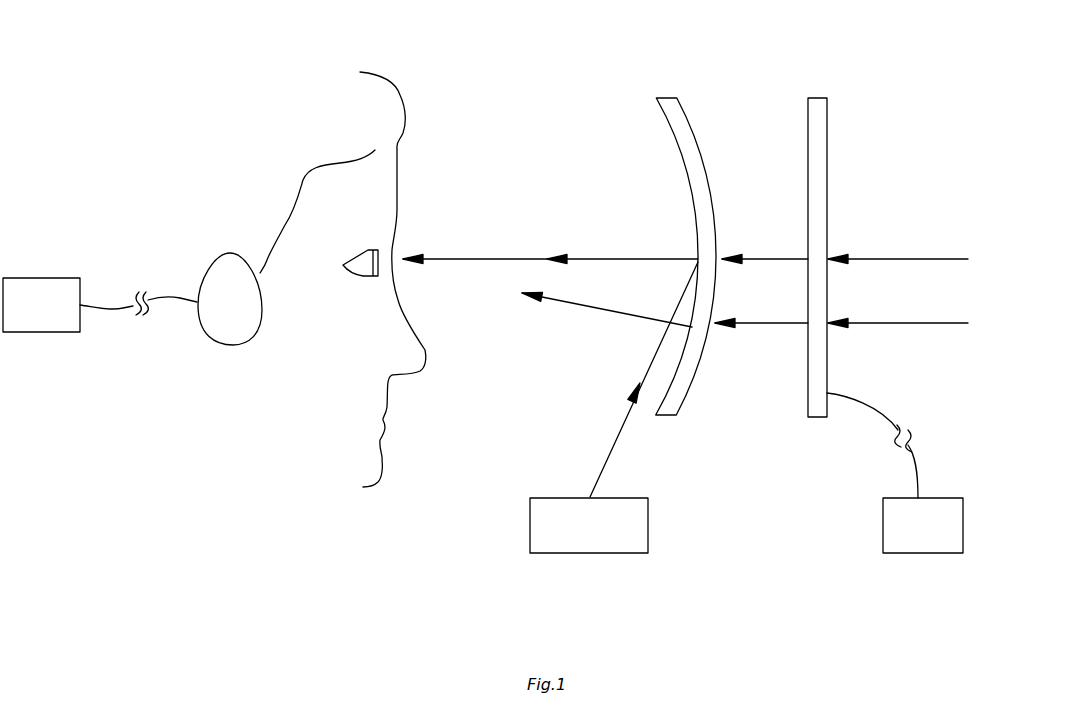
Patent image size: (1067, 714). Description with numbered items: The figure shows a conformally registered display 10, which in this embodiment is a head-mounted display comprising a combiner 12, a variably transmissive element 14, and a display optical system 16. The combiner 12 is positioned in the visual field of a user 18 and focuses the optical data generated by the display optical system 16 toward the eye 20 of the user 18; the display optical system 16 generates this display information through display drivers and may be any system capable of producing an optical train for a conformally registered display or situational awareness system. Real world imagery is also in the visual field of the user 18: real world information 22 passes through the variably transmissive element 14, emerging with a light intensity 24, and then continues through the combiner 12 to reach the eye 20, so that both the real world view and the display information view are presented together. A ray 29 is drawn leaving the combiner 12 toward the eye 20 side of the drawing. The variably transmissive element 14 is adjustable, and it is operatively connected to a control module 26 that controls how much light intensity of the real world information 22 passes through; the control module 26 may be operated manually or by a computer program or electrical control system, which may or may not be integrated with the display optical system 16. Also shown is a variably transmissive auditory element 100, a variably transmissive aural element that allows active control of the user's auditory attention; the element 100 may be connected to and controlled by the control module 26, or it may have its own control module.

The conformally registered display 10 is at (962, 92).
The combiner 12 is at (670, 98).
The variably transmissive element 14 is at (822, 98).
The display optical system 16 is at (580, 538).
The user 18 is at (402, 97).
The eye 20 is at (363, 249).
The real world information 22 is at (923, 323).
The light intensity 24 is at (767, 323).
The control module 26 is at (45, 315).
The reflected light ray 29 is at (600, 307).
The variably transmissive auditory element 100 is at (218, 335).